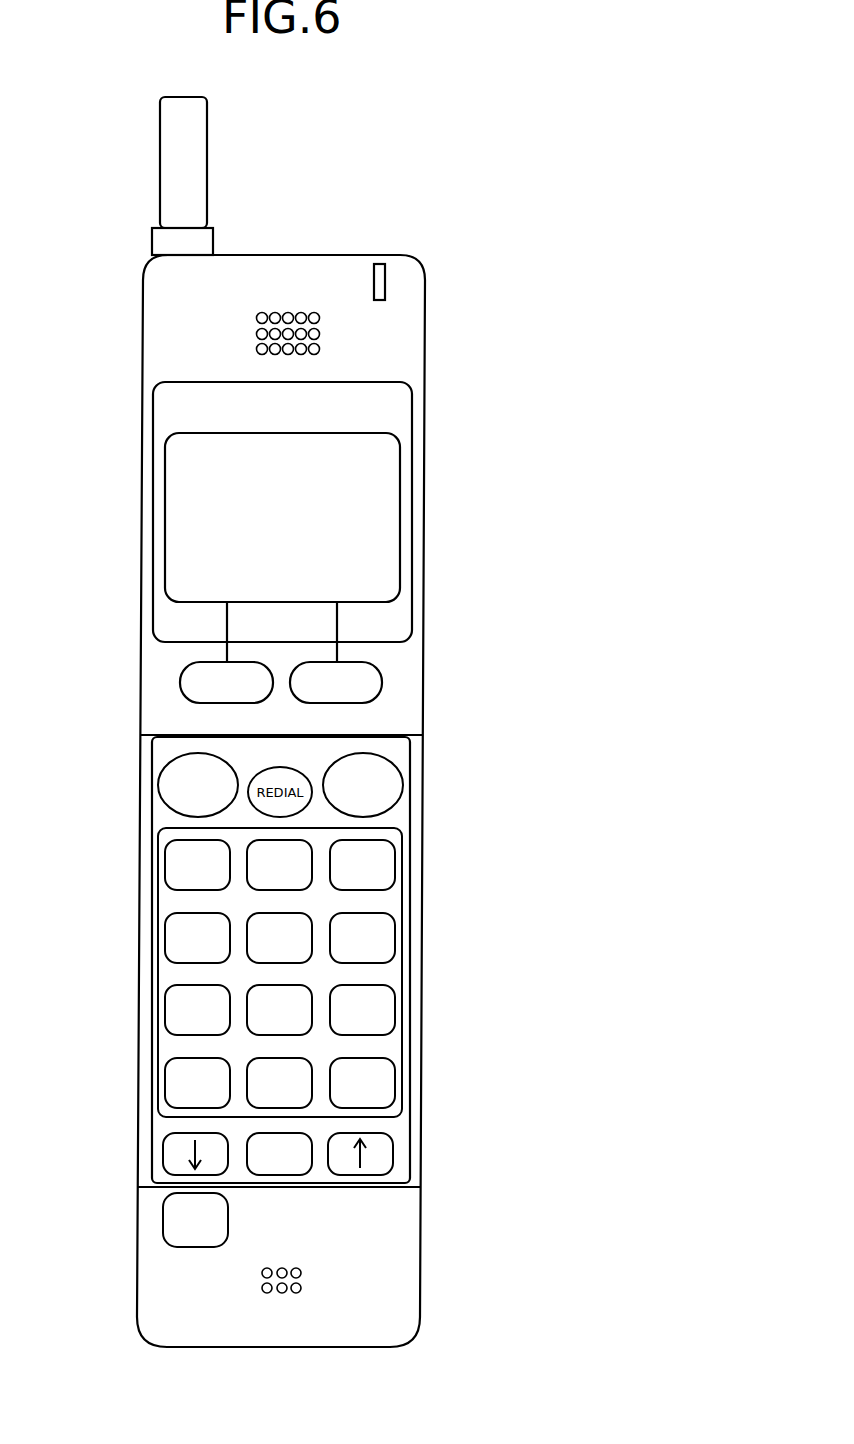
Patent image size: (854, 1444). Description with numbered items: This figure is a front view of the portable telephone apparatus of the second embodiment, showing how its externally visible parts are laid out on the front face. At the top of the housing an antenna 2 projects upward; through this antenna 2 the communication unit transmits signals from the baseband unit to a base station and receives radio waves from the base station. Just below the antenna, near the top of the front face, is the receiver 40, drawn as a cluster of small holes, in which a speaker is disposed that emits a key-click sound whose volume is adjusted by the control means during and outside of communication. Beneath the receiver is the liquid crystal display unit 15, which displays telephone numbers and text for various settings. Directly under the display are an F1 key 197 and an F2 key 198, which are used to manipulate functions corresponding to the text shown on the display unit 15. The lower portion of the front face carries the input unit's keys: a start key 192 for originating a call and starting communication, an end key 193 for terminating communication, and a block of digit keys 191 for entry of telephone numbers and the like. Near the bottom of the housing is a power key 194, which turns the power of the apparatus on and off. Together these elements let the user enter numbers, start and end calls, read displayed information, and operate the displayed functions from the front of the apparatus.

The antenna 2 is at (168, 160).
The receiver 40 is at (289, 312).
The liquid crystal display unit 15 is at (387, 522).
The F1 key 197 is at (185, 683).
The F2 key 198 is at (383, 686).
The start key 192 is at (162, 795).
The end key 193 is at (393, 784).
The digit keys 191 is at (388, 940).
The power key 194 is at (168, 1228).